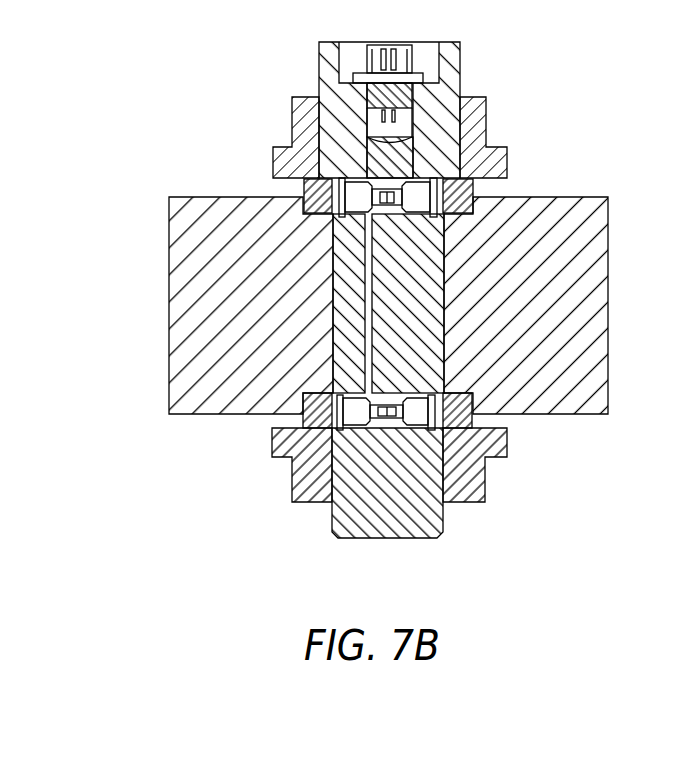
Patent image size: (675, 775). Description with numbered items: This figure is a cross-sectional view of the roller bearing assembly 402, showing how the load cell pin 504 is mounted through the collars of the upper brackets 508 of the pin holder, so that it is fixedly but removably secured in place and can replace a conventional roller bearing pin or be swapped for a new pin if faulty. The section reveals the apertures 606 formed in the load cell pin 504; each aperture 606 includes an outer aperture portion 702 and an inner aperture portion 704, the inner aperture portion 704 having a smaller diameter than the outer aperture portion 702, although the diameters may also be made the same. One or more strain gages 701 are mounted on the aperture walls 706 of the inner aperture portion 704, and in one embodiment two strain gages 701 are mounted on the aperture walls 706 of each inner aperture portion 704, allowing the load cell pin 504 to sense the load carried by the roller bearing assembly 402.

The roller bearing assembly 402 is at (141, 551).
The load cell pin 504 is at (442, 550).
The upper brackets 508 is at (272, 442).
The apertures 606 is at (377, 180).
The strain gages 701 is at (377, 188).
The outer aperture portion 702 is at (420, 195).
The inner aperture portion 704 is at (422, 165).
The aperture walls 706 is at (383, 186).